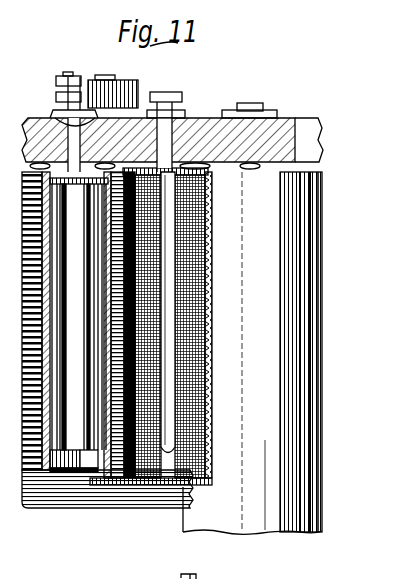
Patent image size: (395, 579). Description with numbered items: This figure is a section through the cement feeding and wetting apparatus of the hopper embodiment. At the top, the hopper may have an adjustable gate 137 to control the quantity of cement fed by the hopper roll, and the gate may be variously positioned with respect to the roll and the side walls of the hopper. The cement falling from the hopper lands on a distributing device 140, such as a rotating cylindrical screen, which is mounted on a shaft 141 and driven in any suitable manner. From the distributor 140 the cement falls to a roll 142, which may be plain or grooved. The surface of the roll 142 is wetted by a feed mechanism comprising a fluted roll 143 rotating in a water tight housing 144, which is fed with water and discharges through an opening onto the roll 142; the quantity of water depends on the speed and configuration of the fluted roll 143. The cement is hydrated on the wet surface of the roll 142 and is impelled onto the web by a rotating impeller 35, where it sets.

The shaft 141 is at (187, 117).
The rotating impeller 35 is at (298, 224).
The distributing device 140 is at (215, 358).
The roll 142 is at (47, 510).
The fluted roll 143 is at (90, 467).
The water tight housing 144 is at (77, 467).
The adjustable gate 137 is at (200, 577).